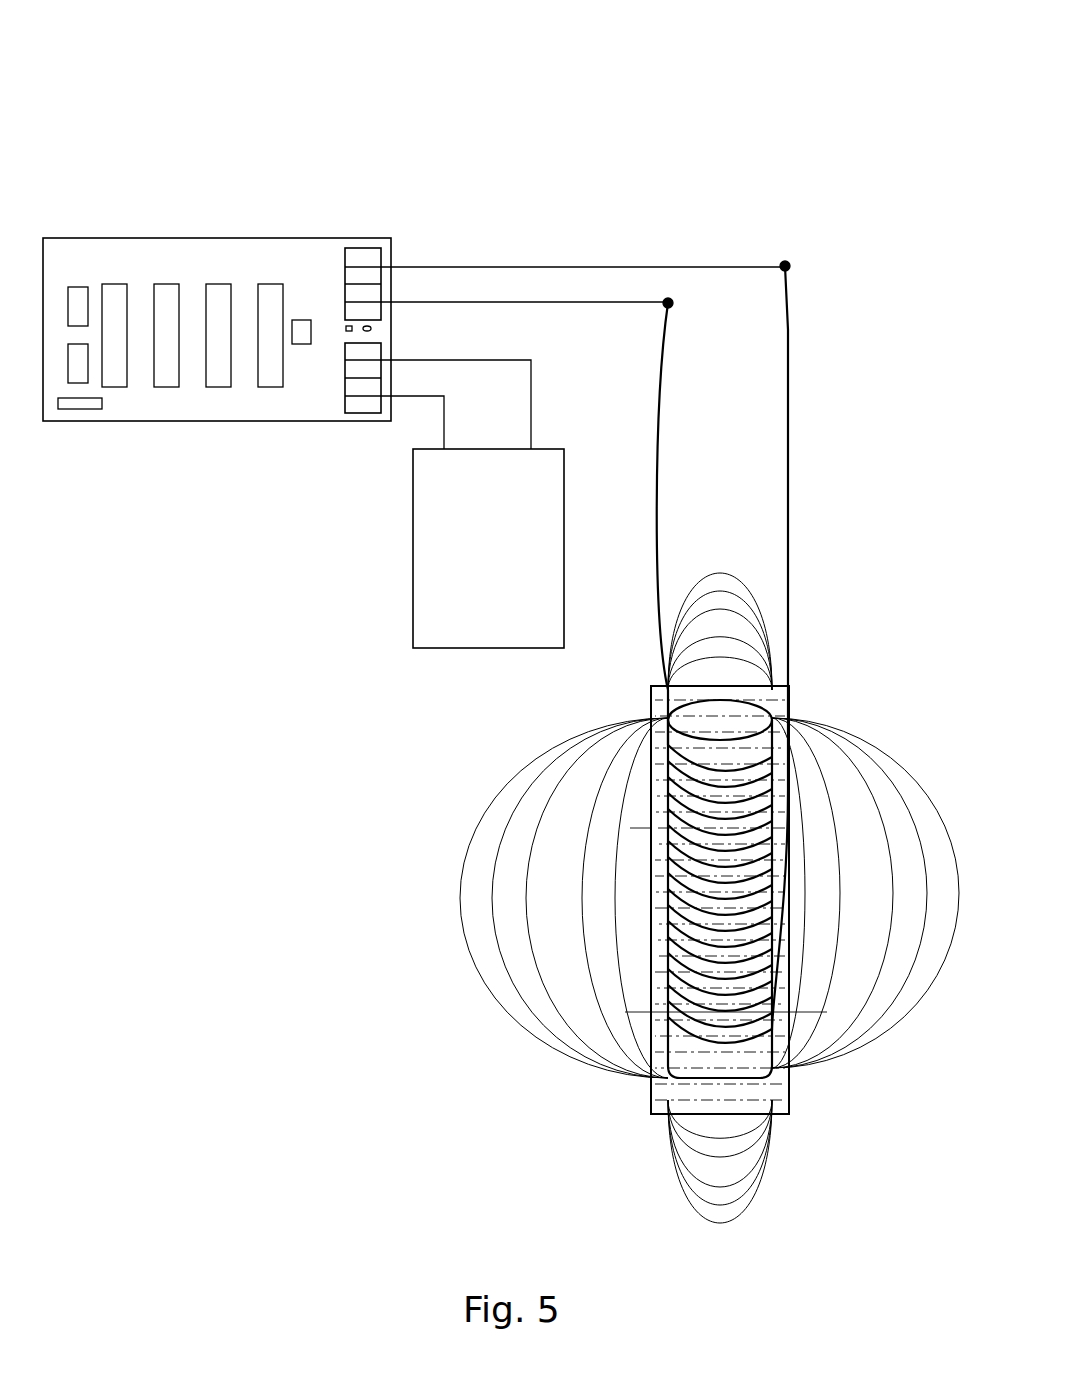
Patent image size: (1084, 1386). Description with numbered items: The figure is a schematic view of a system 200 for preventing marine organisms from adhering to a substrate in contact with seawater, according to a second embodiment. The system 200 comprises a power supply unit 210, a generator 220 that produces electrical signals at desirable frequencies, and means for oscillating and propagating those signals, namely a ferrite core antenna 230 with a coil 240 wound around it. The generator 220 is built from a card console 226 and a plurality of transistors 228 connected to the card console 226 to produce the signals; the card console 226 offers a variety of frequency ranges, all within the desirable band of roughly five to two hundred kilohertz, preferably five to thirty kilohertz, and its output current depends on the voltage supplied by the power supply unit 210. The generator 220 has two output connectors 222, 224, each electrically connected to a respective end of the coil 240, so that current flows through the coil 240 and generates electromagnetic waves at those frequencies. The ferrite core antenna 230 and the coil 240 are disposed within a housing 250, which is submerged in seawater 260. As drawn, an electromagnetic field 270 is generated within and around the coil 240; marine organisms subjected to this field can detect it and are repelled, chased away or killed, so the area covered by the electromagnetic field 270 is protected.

The system 200 is at (748, 110).
The power supply unit 210 is at (453, 527).
The generator 220 is at (302, 257).
The output connector 222 is at (370, 293).
The output connector 224 is at (367, 260).
The card console 226 is at (82, 410).
The transistors 228 is at (261, 301).
The ferrite core antenna 230 is at (710, 760).
The coil 240 is at (668, 880).
The housing 250 is at (650, 1100).
The seawater 260 is at (738, 1098).
The electromagnetic field 270 is at (593, 976).